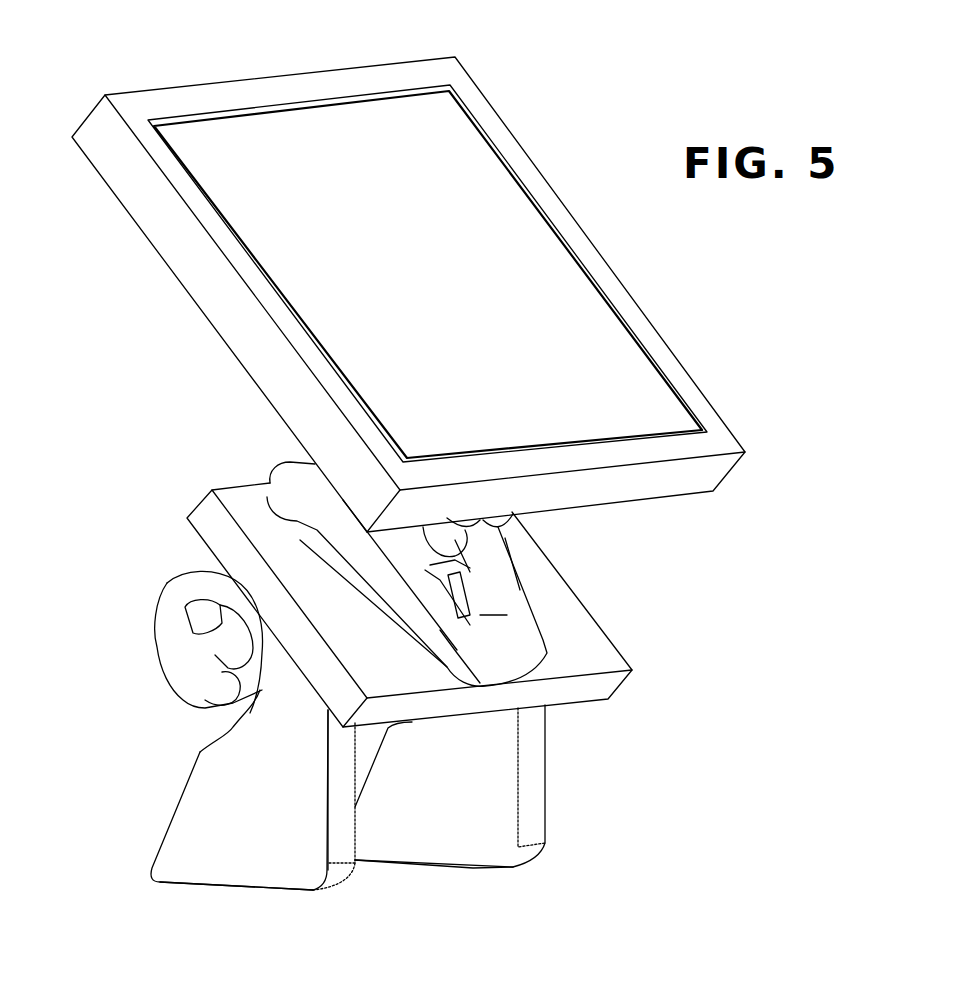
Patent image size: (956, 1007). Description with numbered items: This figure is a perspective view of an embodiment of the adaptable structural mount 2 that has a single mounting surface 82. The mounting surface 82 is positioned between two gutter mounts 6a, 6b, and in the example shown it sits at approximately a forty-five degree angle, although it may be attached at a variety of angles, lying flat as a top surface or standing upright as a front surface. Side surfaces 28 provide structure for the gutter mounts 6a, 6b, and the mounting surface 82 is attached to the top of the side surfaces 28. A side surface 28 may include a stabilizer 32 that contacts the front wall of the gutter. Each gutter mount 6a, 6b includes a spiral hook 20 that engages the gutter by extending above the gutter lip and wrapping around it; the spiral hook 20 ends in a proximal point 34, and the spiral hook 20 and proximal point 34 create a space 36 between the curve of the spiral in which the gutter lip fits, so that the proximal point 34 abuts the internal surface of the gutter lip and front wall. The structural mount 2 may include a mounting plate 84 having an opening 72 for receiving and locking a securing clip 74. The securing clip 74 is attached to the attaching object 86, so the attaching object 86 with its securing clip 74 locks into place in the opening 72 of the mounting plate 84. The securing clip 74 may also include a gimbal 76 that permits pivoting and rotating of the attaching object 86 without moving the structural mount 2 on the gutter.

The structural mount 2 is at (571, 74).
The attaching object 86 is at (632, 390).
The mounting surface 82 is at (570, 617).
The mounting plate 84 is at (503, 587).
The opening 72 is at (510, 617).
The gimbal 76 is at (425, 560).
The securing clip 74 is at (445, 572).
The spiral hook 20 is at (172, 603).
The space 36 is at (228, 623).
The proximal point 34 is at (220, 667).
The stabilizer 32 is at (175, 853).
The gutter mount 6a is at (328, 833).
The gutter mount 6b is at (520, 745).
The side surface 28 is at (230, 865).